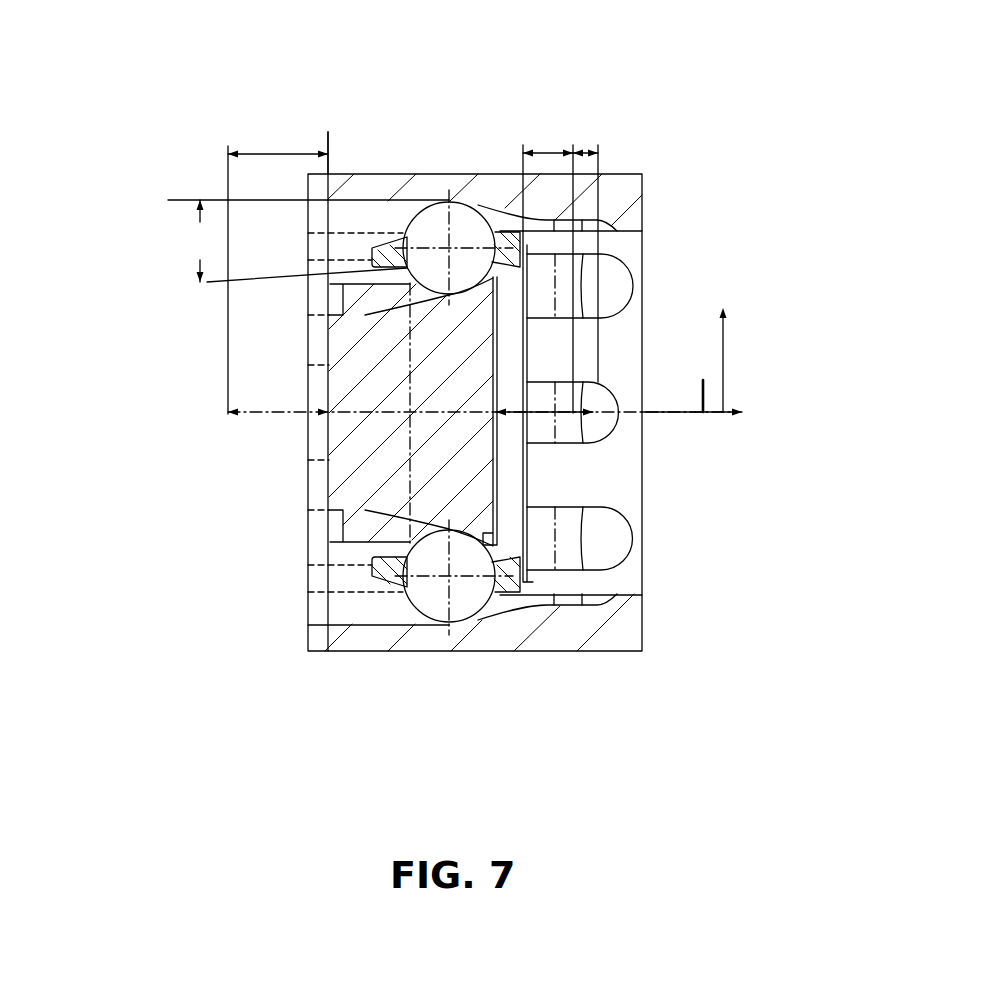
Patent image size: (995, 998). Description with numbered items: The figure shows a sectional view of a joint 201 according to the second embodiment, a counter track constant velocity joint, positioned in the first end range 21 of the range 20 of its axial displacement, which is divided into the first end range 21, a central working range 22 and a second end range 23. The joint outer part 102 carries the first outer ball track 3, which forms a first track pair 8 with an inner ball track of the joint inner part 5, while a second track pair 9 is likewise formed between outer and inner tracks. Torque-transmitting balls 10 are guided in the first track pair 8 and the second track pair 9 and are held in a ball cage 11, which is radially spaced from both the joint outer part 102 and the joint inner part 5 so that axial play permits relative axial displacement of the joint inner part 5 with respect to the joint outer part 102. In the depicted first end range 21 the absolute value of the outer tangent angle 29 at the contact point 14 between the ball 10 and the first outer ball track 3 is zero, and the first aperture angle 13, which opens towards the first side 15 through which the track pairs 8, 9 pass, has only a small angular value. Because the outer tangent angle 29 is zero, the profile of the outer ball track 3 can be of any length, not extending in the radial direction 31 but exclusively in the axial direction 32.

The first outer ball track 3 is at (363, 210).
The joint inner part 5 is at (360, 435).
The first track pair 8 is at (368, 617).
The second track pair 9 is at (317, 525).
The torque-transmitting ball 10 is at (462, 230).
The ball cage 11 is at (513, 575).
The first aperture angle 13 is at (176, 241).
The contact point 14 is at (452, 203).
The first side 15 is at (308, 443).
The range of the axial displacement 20 is at (573, 416).
The first end range 21 is at (309, 150).
The central working range 22 is at (553, 153).
The second end range 23 is at (590, 147).
The outer tangent angle 29 is at (185, 200).
The radial direction 31 is at (726, 342).
The axial direction 32 is at (703, 380).
The joint outer part 102 is at (560, 620).
The joint 201 is at (417, 158).